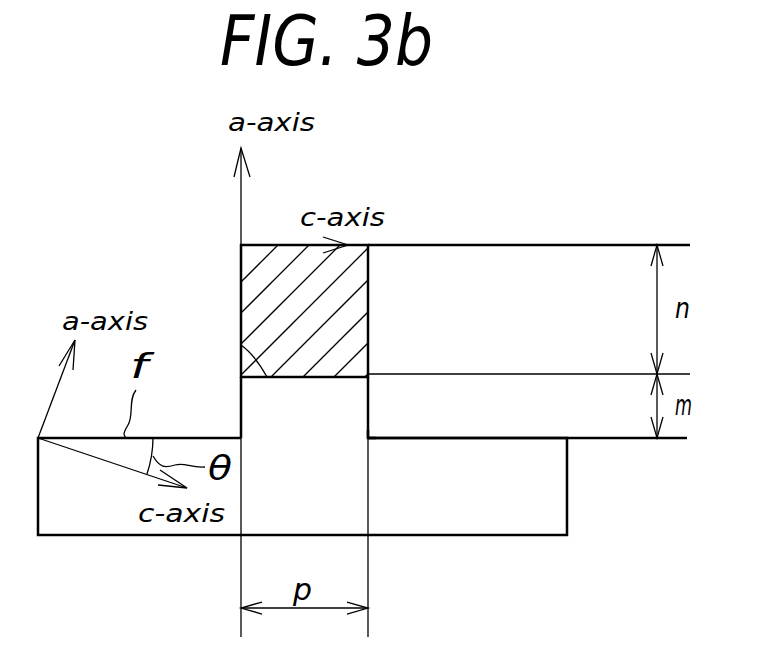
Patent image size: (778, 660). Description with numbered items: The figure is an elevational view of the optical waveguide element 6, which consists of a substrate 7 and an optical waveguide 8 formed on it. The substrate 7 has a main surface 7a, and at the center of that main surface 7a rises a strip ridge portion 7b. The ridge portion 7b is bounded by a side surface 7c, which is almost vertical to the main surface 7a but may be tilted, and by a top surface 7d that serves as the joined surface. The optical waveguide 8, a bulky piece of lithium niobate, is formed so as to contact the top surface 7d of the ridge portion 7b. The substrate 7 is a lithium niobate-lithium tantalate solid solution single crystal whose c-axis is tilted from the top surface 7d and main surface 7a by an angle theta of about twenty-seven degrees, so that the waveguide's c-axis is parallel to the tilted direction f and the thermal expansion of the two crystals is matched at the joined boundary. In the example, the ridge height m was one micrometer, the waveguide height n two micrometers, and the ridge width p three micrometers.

The optical waveguide 8 is at (386, 256).
The top surface 7d is at (241, 345).
The optical waveguide element 6 is at (552, 410).
The main surface 7a is at (462, 438).
The side surface 7c is at (369, 403).
The ridge portion 7b is at (347, 422).
The substrate 7 is at (533, 490).